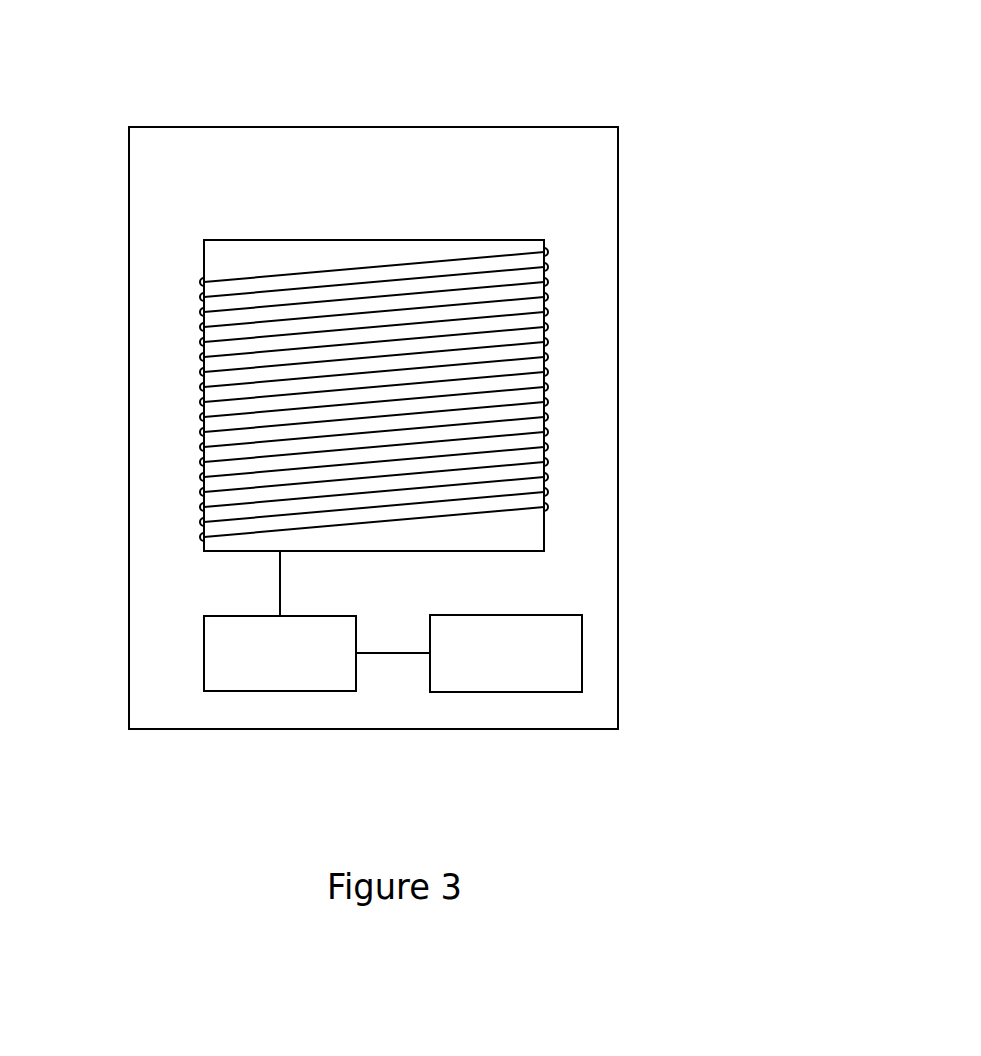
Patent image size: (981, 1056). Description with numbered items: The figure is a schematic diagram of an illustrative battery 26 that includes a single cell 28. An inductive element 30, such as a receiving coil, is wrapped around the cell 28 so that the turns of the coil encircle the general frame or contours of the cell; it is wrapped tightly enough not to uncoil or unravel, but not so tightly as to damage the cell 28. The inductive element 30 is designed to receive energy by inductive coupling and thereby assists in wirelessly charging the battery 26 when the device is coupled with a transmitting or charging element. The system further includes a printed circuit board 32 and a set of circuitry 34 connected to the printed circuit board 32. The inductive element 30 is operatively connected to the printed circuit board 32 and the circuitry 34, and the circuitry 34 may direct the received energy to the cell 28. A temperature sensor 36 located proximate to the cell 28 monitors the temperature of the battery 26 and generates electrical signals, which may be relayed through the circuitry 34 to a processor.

The battery 26 is at (593, 76).
The single cell 28 is at (536, 540).
The inductive element 30 is at (202, 313).
The printed circuit board 32 is at (573, 680).
The circuitry 34 is at (392, 655).
The temperature sensor 36 is at (248, 672).